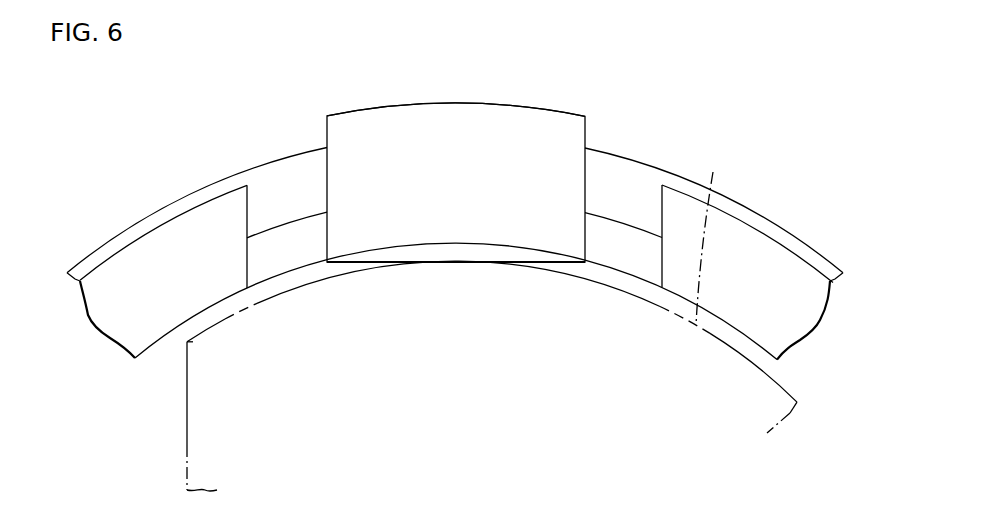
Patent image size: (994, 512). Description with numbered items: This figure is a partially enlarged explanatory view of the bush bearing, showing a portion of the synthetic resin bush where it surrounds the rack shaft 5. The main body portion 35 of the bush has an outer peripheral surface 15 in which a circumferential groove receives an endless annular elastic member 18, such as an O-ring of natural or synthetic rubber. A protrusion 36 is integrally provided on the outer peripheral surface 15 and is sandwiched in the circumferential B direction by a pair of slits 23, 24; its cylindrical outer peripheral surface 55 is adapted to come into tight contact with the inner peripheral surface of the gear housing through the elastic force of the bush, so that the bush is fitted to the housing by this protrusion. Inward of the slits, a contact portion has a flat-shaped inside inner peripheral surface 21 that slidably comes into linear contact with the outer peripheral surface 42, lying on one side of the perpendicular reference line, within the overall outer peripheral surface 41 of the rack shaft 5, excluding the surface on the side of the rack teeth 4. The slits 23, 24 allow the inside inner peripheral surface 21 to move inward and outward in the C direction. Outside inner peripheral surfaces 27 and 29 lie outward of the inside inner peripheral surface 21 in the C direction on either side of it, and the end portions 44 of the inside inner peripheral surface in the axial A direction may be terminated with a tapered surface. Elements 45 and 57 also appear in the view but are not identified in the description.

The rack teeth 4 is at (193, 412).
The rack shaft 5 is at (770, 397).
The outer peripheral surface 15 is at (813, 262).
The endless annular elastic member 18 is at (142, 230).
The inside inner peripheral surface 21 is at (549, 264).
The slit 23 is at (622, 205).
The slit 24 is at (285, 193).
The outside inner peripheral surface 27 is at (743, 337).
The outside inner peripheral surface 29 is at (163, 342).
The main body portion 35 is at (280, 250).
The protrusion 36 is at (372, 127).
The outer peripheral surface 41 is at (713, 234).
The outer peripheral surface 42 is at (455, 258).
The end portion 44 is at (470, 252).
The left end portion 45 is at (122, 283).
The cylindrical outer peripheral surface 55 is at (525, 107).
The outer surface 57 is at (215, 181).